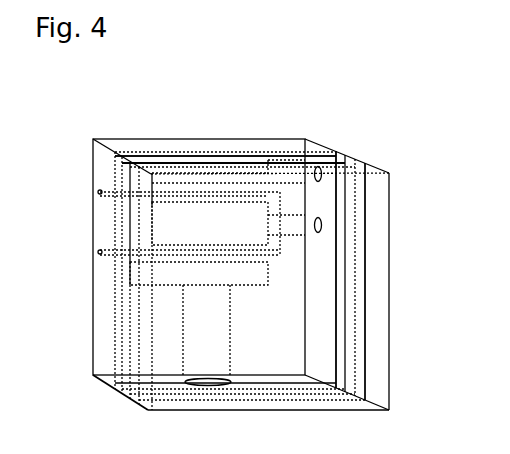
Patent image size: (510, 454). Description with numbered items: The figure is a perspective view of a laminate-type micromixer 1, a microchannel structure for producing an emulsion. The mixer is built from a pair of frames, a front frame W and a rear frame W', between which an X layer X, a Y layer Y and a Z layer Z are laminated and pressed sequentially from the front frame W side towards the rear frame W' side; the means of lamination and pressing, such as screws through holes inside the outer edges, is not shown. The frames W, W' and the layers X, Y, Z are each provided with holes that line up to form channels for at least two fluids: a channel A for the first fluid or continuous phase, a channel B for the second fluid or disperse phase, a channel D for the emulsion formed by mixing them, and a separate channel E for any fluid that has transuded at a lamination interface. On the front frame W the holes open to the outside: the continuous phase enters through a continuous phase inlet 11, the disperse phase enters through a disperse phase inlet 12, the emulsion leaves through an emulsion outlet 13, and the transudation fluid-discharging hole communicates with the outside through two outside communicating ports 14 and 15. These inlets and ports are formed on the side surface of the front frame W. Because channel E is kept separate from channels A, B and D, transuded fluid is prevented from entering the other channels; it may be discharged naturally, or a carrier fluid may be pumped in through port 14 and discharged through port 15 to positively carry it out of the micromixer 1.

The laminate-type micromixer 1 is at (114, 105).
The continuous phase inlet 11 is at (322, 176).
The disperse phase inlet 12 is at (322, 228).
The emulsion outlet 13 is at (203, 388).
The outside communicating port 14 is at (97, 252).
The outside communicating port 15 is at (97, 192).
The continuous phase channel A is at (150, 173).
The disperse phase channel B is at (163, 217).
The emulsion channel D is at (157, 275).
The transudation fluid channel E is at (145, 198).
The front frame W is at (225, 131).
The rear frame W' is at (404, 281).
The X layer X is at (337, 152).
The Y layer Y is at (350, 153).
The Z layer Z is at (366, 161).